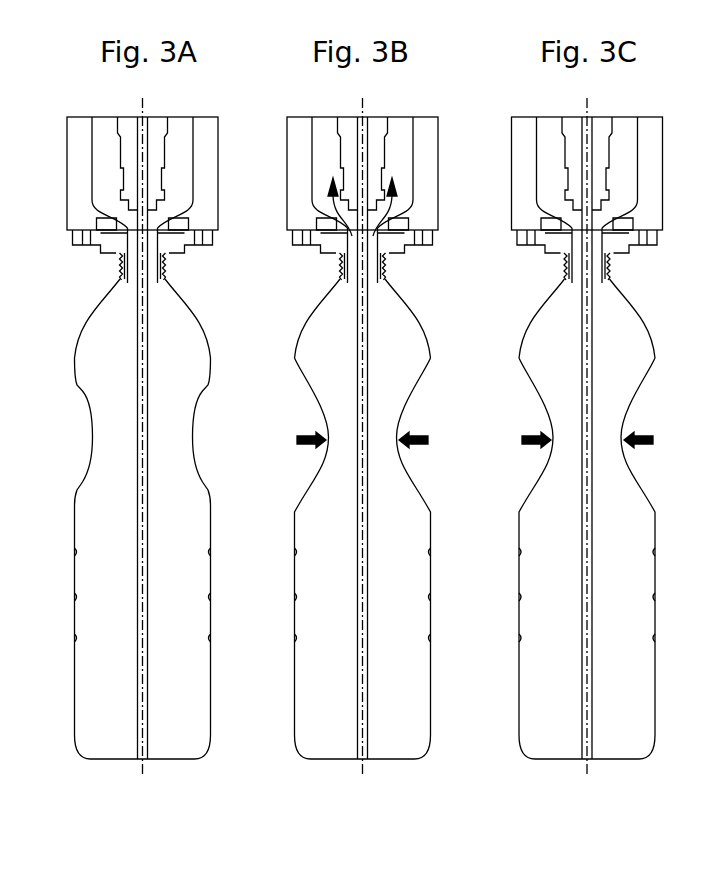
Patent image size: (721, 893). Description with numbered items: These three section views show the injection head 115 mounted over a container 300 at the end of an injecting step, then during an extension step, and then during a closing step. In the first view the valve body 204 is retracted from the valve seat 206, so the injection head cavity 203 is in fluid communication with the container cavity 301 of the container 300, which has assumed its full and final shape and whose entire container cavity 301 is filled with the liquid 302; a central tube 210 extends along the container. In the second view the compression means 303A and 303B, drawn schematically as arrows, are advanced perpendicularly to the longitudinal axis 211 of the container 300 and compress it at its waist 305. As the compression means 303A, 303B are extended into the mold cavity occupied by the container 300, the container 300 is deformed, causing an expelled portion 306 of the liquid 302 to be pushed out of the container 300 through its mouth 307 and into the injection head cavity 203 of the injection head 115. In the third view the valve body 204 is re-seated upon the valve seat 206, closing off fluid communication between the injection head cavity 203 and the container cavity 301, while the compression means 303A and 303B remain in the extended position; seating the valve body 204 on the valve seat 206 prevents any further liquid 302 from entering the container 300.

In FIG. 3A, the injection head 115 is at (224, 122).
In FIG. 3B, the injection head 115 is at (390, 149).
In FIG. 3C, the injection head 115 is at (615, 149).
In FIG. 3A, the injection head cavity 203 is at (183, 125).
In FIG. 3B, the injection head cavity 203 is at (366, 174).
In FIG. 3C, the injection head cavity 203 is at (592, 174).
In FIG. 3A, the valve body 204 is at (157, 180).
In FIG. 3B, the valve body 204 is at (363, 163).
In FIG. 3C, the valve body 204 is at (638, 163).
In FIG. 3A, the valve seat 206 is at (118, 228).
In FIG. 3B, the valve seat 206 is at (363, 235).
In FIG. 3C, the valve seat 206 is at (563, 231).
In FIG. 3A, the tube 210 is at (148, 348).
In FIG. 3B, the tube 210 is at (423, 438).
In FIG. 3C, the tube 210 is at (646, 437).
In FIG. 3B, the longitudinal axis 211 is at (330, 422).
In FIG. 3A, the container 300 is at (116, 545).
In FIG. 3B, the container 300 is at (373, 545).
In FIG. 3C, the container 300 is at (594, 545).
In FIG. 3A, the container cavity 301 is at (100, 752).
In FIG. 3B, the container cavity 301 is at (363, 770).
In FIG. 3C, the container cavity 301 is at (587, 770).
In FIG. 3A, the liquid 302 is at (74, 580).
In FIG. 3B, the liquid 302 is at (337, 546).
In FIG. 3C, the liquid 302 is at (561, 546).
In FIG. 3B, the compression means 303A is at (277, 444).
In FIG. 3C, the compression means 303A is at (502, 435).
In FIG. 3B, the compression means 303B is at (450, 450).
In FIG. 3C, the compression means 303B is at (672, 449).
In FIG. 3B, the waist 305 is at (400, 340).
In FIG. 3C, the waist 305 is at (620, 348).
In FIG. 3B, the expelled portion 306 is at (322, 207).
In FIG. 3B, the mouth 307 is at (399, 271).